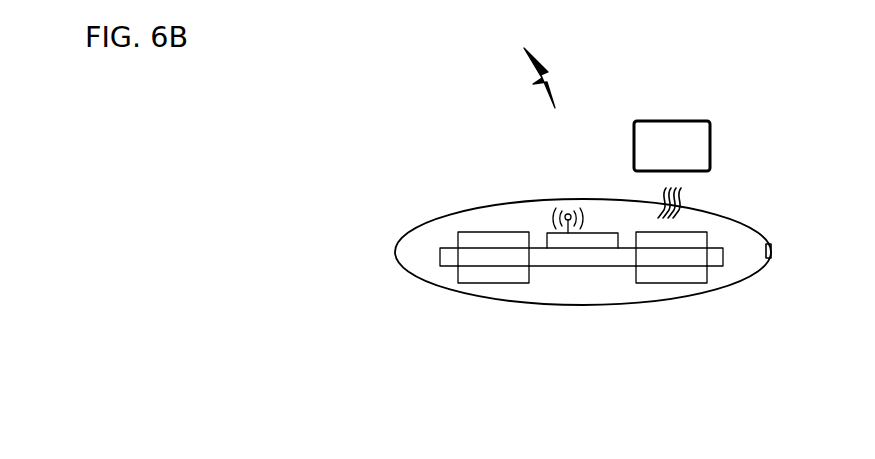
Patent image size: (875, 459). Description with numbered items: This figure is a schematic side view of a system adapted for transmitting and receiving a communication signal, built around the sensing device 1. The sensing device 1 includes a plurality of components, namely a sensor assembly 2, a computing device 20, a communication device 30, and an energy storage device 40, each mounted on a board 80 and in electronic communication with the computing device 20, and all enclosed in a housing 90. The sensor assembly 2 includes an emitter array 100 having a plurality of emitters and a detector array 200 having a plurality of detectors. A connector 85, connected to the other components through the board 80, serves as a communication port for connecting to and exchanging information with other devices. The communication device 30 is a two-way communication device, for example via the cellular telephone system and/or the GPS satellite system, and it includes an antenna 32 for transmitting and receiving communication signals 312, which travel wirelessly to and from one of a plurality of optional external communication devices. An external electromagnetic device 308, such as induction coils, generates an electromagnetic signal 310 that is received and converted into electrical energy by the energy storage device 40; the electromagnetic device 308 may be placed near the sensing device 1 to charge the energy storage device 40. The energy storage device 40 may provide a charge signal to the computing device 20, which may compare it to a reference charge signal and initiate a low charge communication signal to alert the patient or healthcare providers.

The sensing device 1 is at (395, 251).
The sensor assembly 2 is at (507, 284).
The computing device 20 is at (470, 240).
The communication device 30 is at (598, 237).
The antenna 32 is at (553, 213).
The energy storage device 40 is at (677, 245).
The board 80 is at (713, 252).
The connector 85 is at (772, 250).
The housing 90 is at (746, 283).
The emitter array 100 is at (697, 273).
The detector array 200 is at (472, 270).
The external electromagnetic device 308 is at (712, 147).
The electromagnetic signal 310 is at (680, 195).
The communication signals 312 is at (529, 78).